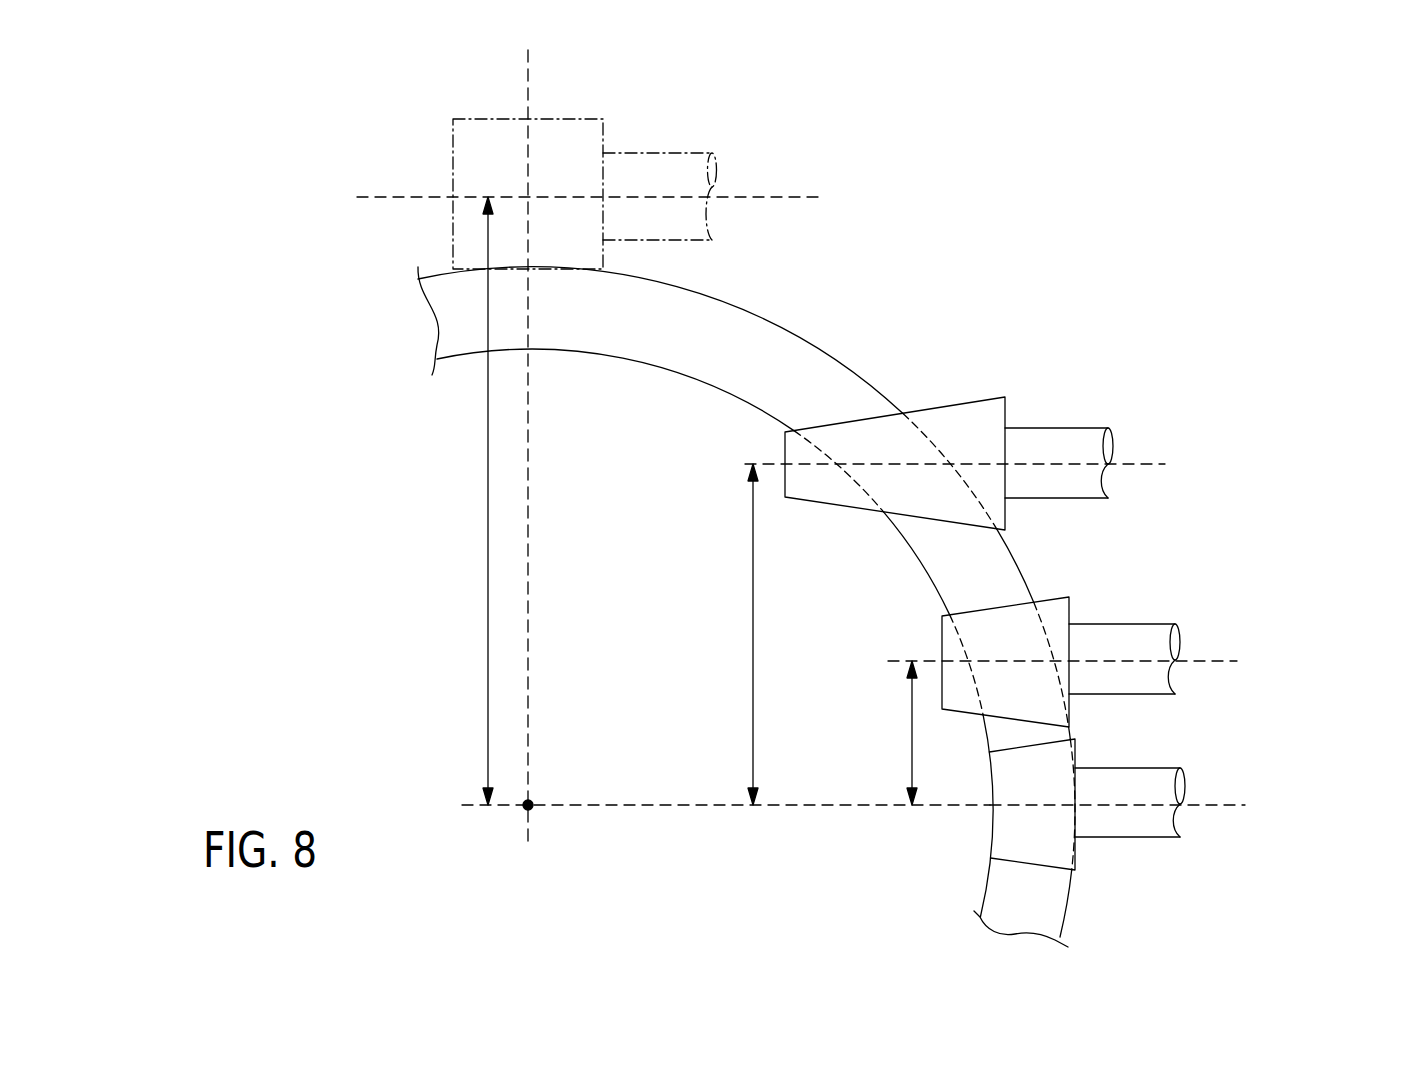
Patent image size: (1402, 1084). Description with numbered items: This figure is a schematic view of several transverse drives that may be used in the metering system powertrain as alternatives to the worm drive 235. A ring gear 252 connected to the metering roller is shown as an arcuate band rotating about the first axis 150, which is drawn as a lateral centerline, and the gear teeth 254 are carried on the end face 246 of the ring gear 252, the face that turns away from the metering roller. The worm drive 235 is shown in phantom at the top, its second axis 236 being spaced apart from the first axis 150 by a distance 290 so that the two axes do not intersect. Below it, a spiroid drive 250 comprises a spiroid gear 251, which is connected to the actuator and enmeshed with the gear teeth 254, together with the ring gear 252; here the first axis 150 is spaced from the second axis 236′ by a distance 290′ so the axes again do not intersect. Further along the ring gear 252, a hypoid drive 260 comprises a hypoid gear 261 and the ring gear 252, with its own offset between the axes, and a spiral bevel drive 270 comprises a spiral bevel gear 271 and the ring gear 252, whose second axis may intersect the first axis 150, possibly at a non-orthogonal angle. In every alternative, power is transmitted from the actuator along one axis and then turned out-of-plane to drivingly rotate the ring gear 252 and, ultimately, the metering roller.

The first axis 150 is at (526, 810).
The worm drive 235 is at (472, 101).
The second axis 236 is at (818, 197).
The second axis 236′ is at (1139, 464).
The longitudinal face 246 is at (657, 622).
The spiroid drive 250 is at (957, 437).
The spiroid gear 251 is at (958, 429).
The ring gear 252 is at (774, 321).
The gear teeth 254 is at (647, 335).
The hypoid drive 260 is at (1101, 642).
The hypoid gear 261 is at (998, 617).
The spiral bevel drive 270 is at (1071, 826).
The spiral bevel gear 271 is at (1002, 832).
The distance 290 is at (487, 501).
The distance 290′ is at (758, 634).